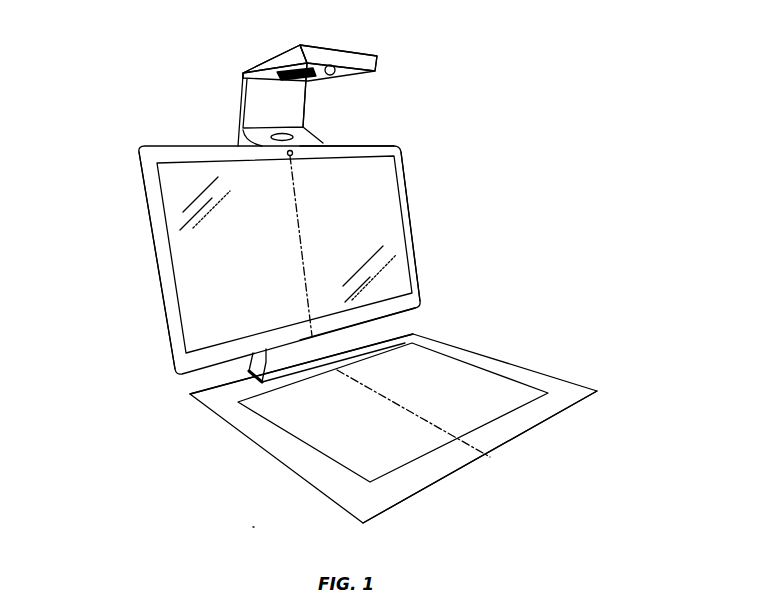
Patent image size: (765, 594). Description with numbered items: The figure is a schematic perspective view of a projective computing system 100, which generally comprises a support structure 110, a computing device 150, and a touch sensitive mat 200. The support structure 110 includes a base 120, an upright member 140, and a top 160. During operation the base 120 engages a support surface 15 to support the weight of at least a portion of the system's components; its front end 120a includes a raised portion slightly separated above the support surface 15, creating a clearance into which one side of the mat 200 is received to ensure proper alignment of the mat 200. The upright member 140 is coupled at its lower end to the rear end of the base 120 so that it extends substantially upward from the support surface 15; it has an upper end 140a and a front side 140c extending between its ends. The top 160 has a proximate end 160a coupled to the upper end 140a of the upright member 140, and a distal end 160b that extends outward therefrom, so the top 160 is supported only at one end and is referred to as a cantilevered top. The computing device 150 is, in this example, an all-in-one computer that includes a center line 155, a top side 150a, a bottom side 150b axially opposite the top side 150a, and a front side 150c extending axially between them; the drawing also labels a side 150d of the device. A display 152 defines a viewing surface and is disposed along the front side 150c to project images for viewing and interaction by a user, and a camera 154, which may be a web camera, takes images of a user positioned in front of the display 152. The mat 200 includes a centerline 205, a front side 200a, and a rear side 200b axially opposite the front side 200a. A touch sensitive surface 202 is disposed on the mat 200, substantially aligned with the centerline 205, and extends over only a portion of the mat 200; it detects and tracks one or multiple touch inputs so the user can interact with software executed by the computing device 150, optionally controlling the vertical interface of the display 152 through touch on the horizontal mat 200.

The support surface 15 is at (253, 527).
The projective computing system 100 is at (500, 97).
The support structure 110 is at (133, 118).
The base 120 is at (240, 372).
The front end 120a is at (313, 384).
The upright member 140 is at (237, 109).
The upper end 140a is at (240, 68).
The front side 140c is at (303, 95).
The computing device 150 is at (413, 208).
The top side 150a is at (376, 143).
The bottom side 150b is at (392, 316).
The front side 150c is at (405, 254).
The display left edge 150d is at (137, 232).
The display 152 is at (398, 157).
The camera 154 is at (288, 151).
The center line 155 is at (315, 226).
The top 160 is at (316, 38).
The proximate end 160a is at (275, 59).
The distal end 160b is at (382, 52).
The touch sensitive mat 200 is at (549, 383).
The front side 200a is at (410, 497).
The rear side 200b is at (196, 394).
The touch sensitive surface 202 is at (483, 408).
The centerline 205 is at (388, 398).